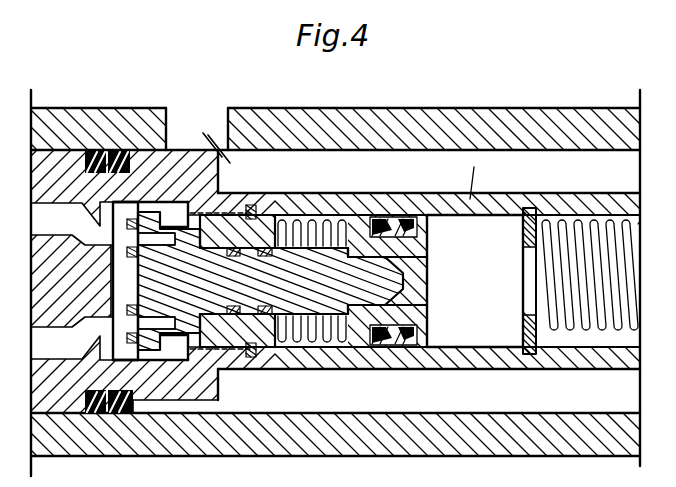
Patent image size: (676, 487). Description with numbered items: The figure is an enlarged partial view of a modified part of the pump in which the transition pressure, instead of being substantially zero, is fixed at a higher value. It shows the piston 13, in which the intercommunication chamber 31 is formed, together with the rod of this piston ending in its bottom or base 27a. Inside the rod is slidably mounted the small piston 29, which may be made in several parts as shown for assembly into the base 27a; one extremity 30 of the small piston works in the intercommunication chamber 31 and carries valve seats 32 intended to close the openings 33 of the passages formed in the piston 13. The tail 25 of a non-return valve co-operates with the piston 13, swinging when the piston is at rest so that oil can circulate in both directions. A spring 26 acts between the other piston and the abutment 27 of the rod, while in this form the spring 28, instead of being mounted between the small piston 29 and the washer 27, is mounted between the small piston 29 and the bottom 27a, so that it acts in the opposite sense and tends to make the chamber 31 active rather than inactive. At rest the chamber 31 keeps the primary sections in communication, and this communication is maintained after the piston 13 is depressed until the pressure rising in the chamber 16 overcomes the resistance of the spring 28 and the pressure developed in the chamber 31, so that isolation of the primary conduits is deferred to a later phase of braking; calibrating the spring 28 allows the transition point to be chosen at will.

The piston 13 is at (178, 388).
The chamber 16 is at (475, 281).
The tail 25 is at (230, 163).
The spring 26 is at (592, 222).
The abutment 27 is at (521, 325).
The base of the rod 27a is at (296, 222).
The spring 28 is at (335, 347).
The small piston 29 is at (358, 330).
The extremity 30 is at (150, 281).
The intercommunication chamber 31 is at (105, 403).
The valve seats 32 is at (133, 185).
The openings 33 is at (96, 175).